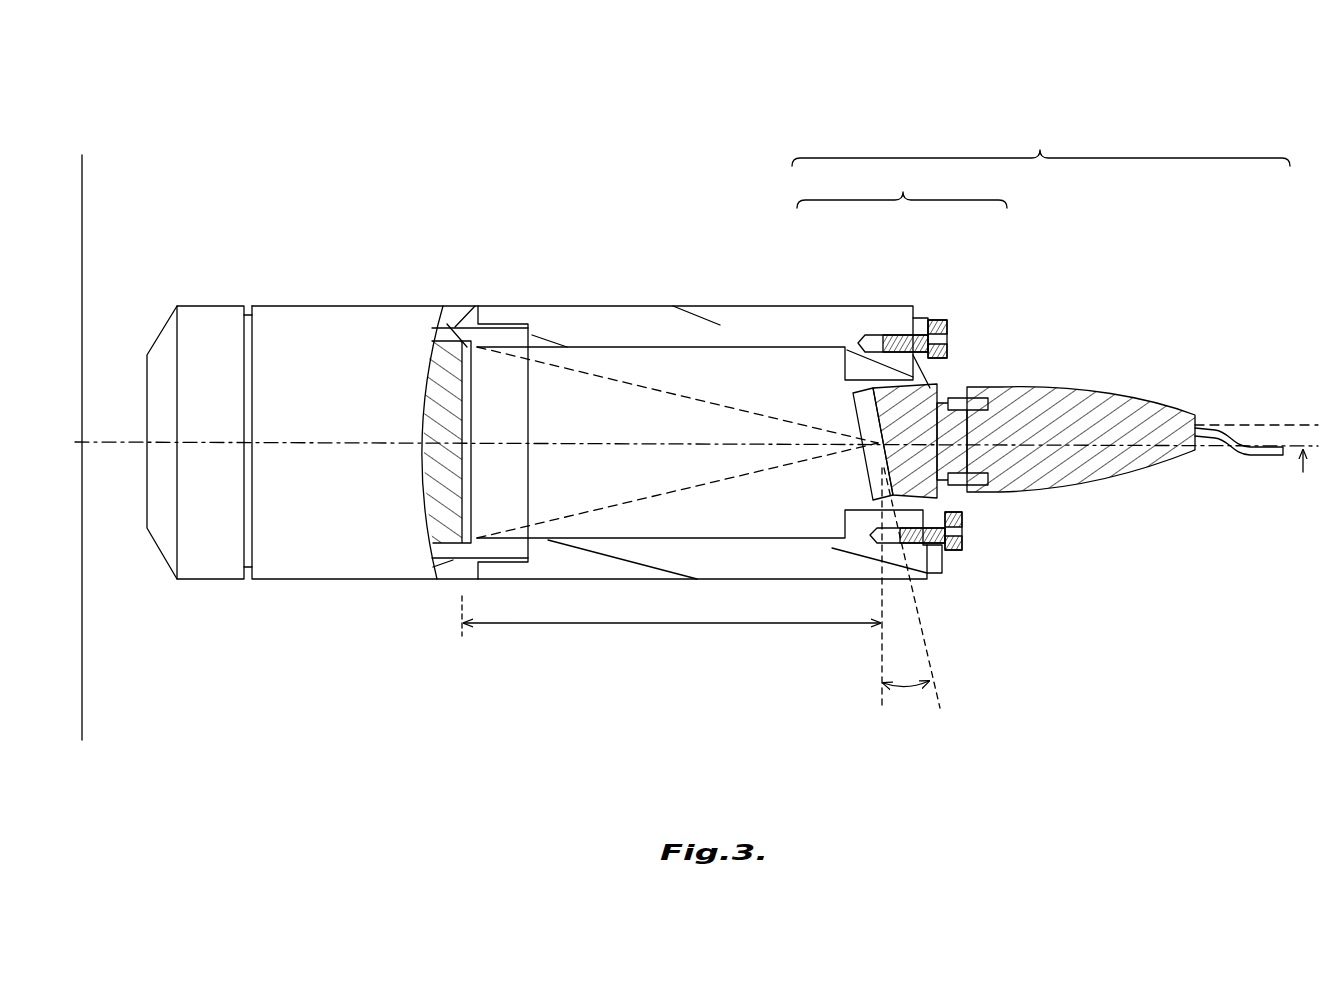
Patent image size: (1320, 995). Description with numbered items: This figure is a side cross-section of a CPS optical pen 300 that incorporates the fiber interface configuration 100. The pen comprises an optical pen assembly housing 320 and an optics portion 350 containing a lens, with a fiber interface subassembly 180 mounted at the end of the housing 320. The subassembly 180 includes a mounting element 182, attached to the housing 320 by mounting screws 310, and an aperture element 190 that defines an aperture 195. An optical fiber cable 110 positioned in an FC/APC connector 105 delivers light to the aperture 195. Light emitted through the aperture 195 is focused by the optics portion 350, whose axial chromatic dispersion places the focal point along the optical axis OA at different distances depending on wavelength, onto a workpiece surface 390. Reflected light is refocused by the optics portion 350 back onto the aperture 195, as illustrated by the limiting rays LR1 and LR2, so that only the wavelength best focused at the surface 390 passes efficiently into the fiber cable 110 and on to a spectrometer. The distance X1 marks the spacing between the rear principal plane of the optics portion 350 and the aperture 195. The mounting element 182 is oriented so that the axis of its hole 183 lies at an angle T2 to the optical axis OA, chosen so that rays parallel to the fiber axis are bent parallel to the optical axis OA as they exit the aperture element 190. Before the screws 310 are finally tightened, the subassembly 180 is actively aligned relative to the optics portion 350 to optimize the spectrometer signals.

The CPS optical pen 300 is at (1233, 106).
The workpiece surface 390 is at (82, 190).
The optics portion 350 is at (545, 281).
The optical pen assembly housing 320 is at (731, 306).
The limiting ray LR1 is at (590, 377).
The limiting ray LR2 is at (618, 503).
The optical axis OA is at (115, 447).
The distance X1 is at (640, 627).
The fiber interface configuration 100 is at (1041, 144).
The fiber interface subassembly 180 is at (902, 187).
The aperture 195 is at (878, 443).
The aperture element 190 is at (863, 413).
The mounting element 182 is at (913, 318).
The mounting screws 310 is at (938, 320).
The hole 183 is at (933, 388).
The FC/APC connector 105 is at (1074, 390).
The optical fiber cable 110 is at (1231, 455).
The angle T2 is at (1303, 421).